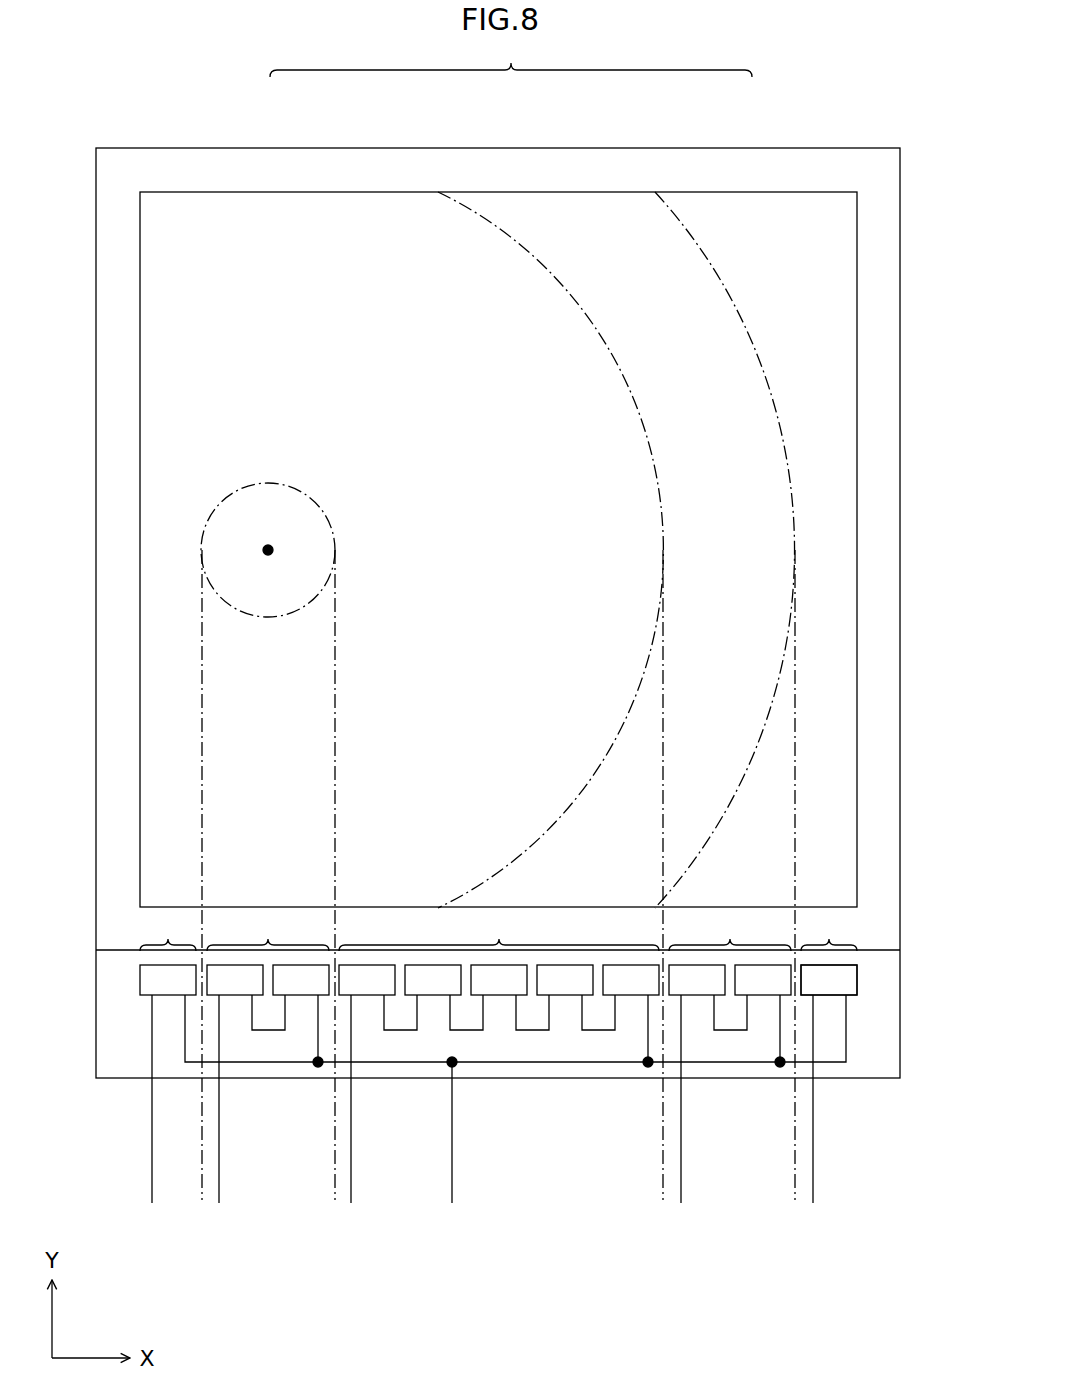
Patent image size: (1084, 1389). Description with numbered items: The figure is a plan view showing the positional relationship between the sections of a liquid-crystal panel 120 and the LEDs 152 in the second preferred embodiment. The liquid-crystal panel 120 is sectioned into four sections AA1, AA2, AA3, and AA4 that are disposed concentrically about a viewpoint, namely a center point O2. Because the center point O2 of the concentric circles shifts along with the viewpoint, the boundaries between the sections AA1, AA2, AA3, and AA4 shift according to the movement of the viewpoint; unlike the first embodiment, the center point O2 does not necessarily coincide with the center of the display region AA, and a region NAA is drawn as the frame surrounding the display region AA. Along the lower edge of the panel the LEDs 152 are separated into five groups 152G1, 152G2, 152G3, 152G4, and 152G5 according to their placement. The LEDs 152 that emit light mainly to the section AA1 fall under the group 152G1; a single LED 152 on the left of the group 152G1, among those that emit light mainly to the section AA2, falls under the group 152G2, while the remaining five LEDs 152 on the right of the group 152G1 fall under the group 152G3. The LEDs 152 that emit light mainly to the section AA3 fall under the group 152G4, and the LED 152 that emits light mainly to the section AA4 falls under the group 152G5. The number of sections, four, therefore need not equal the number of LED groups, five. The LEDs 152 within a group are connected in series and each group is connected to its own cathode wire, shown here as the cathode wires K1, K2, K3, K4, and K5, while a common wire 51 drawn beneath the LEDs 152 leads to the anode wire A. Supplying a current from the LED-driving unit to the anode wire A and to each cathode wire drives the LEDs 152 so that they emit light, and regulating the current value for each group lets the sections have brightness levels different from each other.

The liquid-crystal panel 120 is at (878, 168).
The non-active area NAA is at (205, 160).
The display region AA is at (511, 57).
The section AA1 is at (293, 500).
The section AA2 is at (421, 245).
The section AA3 is at (544, 216).
The section AA4 is at (727, 220).
The center point O2 is at (288, 552).
The LED 152 is at (840, 977).
The group 152G1 is at (268, 971).
The group 152G2 is at (166, 953).
The group 152G3 is at (499, 971).
The group 152G4 is at (730, 971).
The group 152G5 is at (830, 953).
The common wiring 51 is at (882, 1055).
The cathode wire K1 is at (217, 1190).
The cathode wire K2 is at (150, 1190).
The cathode wire K3 is at (349, 1190).
The fourth wiring K4 is at (679, 1190).
The fifth wiring K5 is at (811, 1190).
The anode wire A is at (450, 1190).